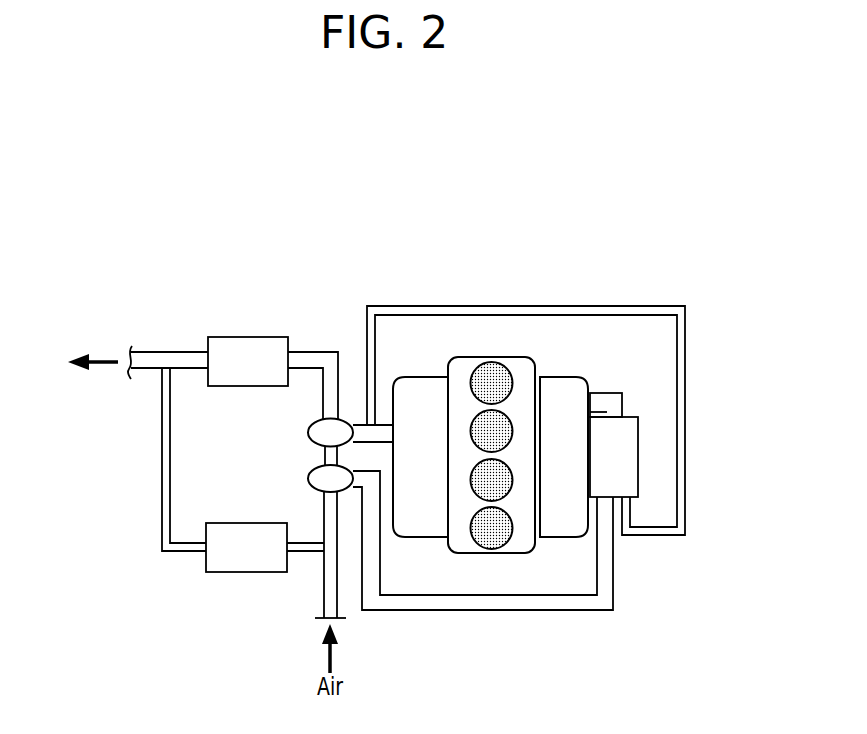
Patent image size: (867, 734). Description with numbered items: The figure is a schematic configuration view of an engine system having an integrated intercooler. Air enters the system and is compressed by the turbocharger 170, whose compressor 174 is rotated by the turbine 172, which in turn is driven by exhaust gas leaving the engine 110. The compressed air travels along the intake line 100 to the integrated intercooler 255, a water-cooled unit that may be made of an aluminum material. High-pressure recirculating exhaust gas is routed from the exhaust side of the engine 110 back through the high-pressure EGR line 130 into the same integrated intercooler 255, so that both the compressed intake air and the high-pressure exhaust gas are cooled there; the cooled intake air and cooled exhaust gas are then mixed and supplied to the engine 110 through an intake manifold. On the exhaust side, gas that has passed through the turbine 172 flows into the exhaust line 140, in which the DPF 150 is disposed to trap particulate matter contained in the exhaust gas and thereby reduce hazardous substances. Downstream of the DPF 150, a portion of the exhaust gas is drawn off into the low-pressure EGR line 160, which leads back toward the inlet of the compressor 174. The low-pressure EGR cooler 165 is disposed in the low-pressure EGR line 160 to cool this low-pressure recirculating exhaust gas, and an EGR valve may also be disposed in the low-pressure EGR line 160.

The intake line 100 is at (432, 605).
The engine 110 is at (546, 563).
The high-pressure EGR line 130 is at (523, 307).
The exhaust line 140 is at (313, 356).
The DPF 150 is at (250, 336).
The low-pressure EGR line 160 is at (162, 453).
The low-pressure EGR cooler 165 is at (207, 565).
The turbocharger 170 is at (290, 559).
The turbine 172 is at (318, 430).
The compressor 174 is at (322, 485).
The integrated intercooler 255 is at (638, 455).